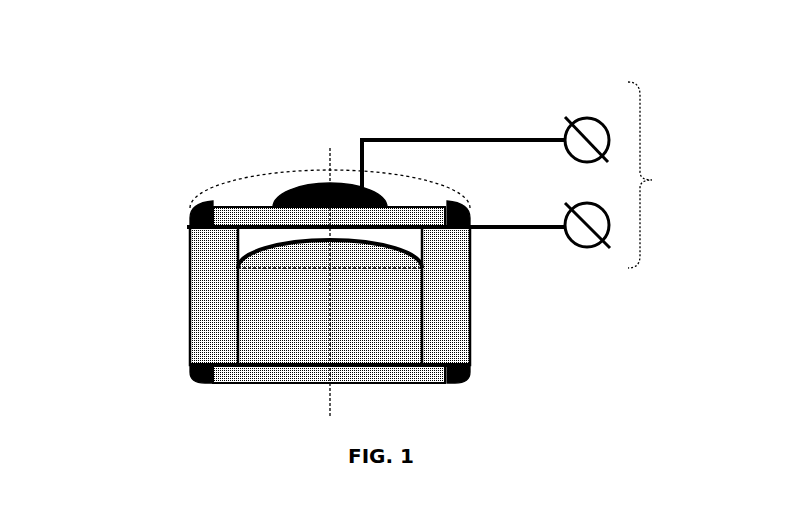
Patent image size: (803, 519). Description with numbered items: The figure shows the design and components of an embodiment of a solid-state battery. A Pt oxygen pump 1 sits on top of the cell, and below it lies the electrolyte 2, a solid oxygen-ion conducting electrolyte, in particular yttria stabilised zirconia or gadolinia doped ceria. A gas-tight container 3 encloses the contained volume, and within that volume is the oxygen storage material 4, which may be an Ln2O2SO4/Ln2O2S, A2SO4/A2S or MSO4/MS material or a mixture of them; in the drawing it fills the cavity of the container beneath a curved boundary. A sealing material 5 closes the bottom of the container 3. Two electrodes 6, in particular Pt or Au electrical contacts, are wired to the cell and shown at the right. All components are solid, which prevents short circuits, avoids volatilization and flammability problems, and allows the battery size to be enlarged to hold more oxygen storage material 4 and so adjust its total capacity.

The Pt oxygen pump 1 is at (303, 190).
The electrolyte 2 is at (243, 213).
The gas-tight container 3 is at (196, 246).
The oxygen storage material 4 is at (247, 353).
The sealing material 5 is at (190, 367).
The electrodes 6 is at (670, 207).